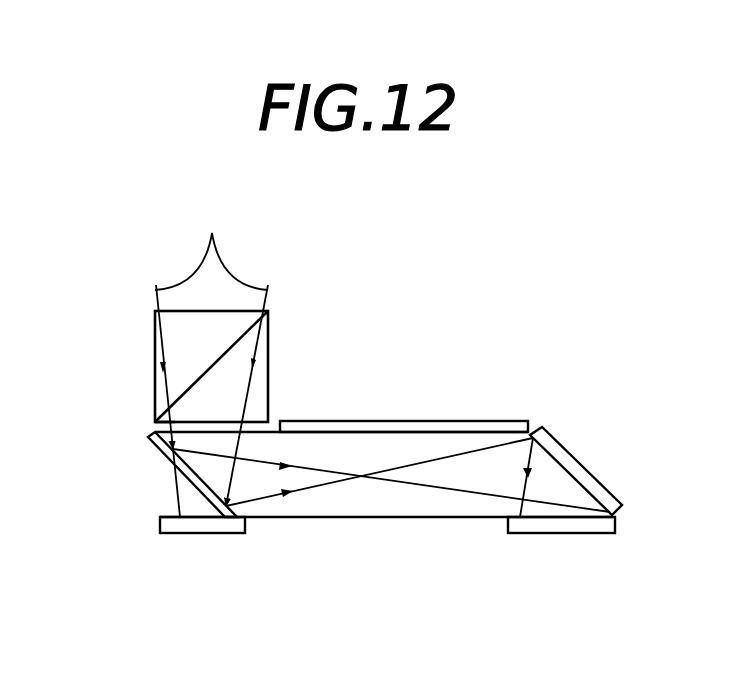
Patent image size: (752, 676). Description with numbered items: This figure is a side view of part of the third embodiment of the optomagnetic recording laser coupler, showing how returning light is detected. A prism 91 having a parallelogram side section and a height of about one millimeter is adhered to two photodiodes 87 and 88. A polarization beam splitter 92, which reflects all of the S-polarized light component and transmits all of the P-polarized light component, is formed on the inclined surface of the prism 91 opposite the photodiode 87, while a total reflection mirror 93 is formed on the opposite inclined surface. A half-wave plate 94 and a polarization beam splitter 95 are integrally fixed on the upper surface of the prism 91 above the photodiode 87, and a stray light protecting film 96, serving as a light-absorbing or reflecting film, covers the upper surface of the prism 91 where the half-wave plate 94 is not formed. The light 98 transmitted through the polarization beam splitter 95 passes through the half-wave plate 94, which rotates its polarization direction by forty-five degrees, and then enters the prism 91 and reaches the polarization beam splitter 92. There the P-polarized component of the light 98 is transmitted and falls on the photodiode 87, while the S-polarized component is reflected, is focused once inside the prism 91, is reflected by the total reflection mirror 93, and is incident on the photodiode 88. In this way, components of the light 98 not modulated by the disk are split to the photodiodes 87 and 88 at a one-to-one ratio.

The photodiode 87 is at (200, 538).
The photodiode 88 is at (552, 536).
The prism 91 is at (405, 455).
The polarization beam splitter 92 is at (193, 481).
The total reflection mirror 93 is at (563, 458).
The λ/2 plate 94 is at (162, 427).
The polarization beam splitter 95 is at (246, 346).
The stray light protecting film 96 is at (388, 425).
The light 98 is at (382, 358).